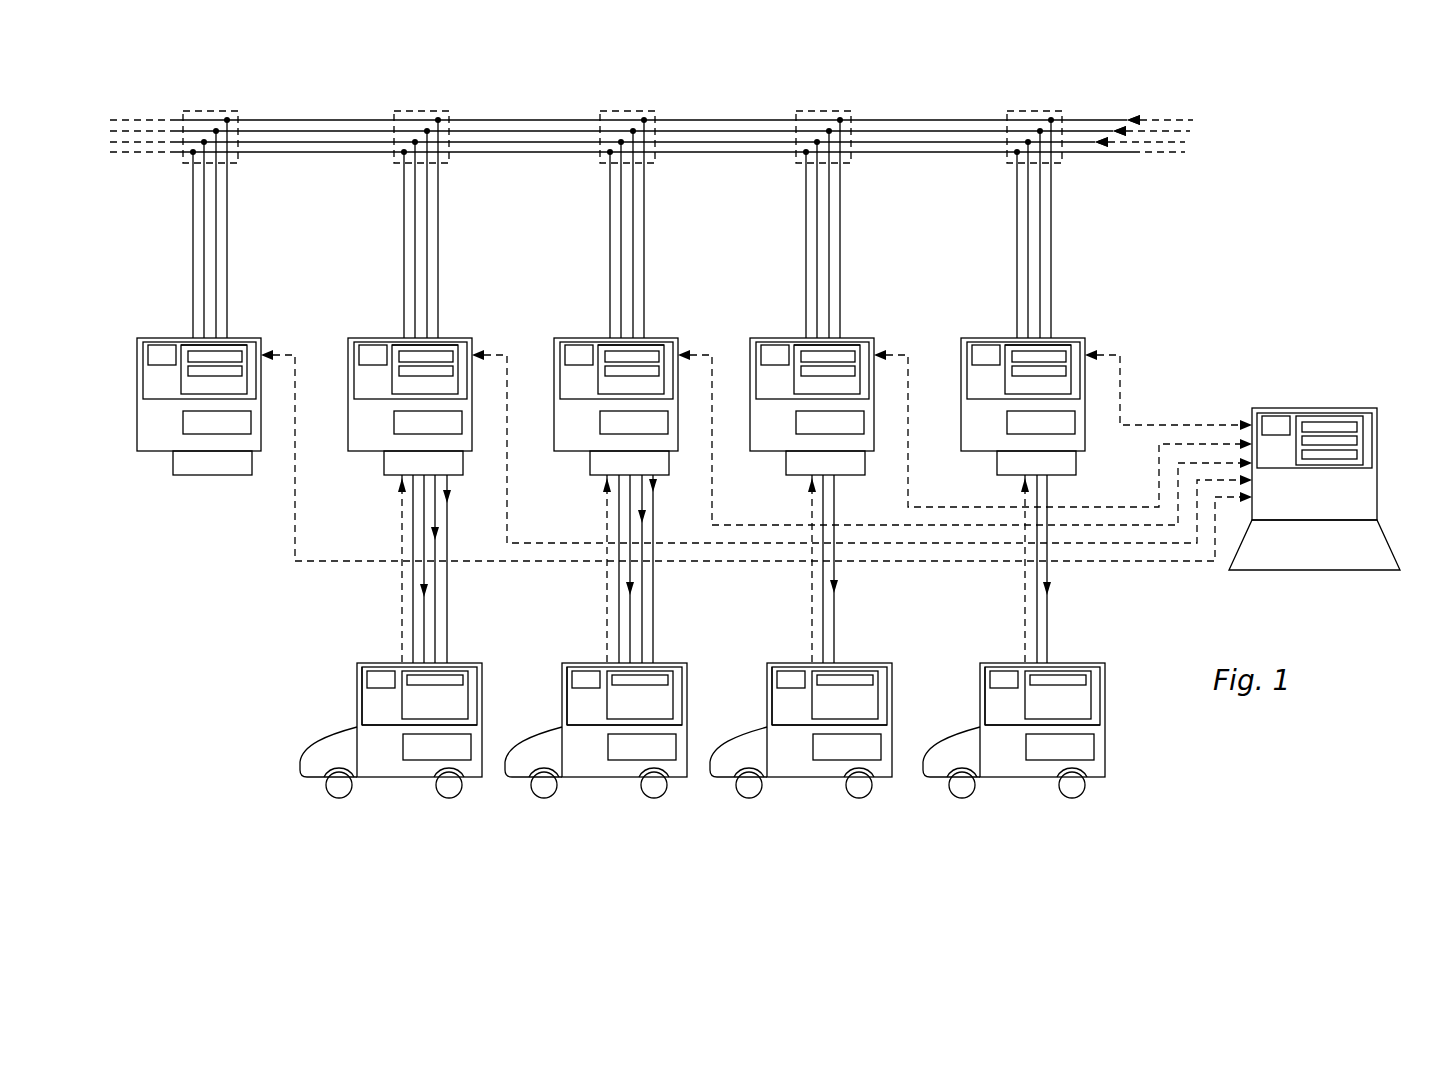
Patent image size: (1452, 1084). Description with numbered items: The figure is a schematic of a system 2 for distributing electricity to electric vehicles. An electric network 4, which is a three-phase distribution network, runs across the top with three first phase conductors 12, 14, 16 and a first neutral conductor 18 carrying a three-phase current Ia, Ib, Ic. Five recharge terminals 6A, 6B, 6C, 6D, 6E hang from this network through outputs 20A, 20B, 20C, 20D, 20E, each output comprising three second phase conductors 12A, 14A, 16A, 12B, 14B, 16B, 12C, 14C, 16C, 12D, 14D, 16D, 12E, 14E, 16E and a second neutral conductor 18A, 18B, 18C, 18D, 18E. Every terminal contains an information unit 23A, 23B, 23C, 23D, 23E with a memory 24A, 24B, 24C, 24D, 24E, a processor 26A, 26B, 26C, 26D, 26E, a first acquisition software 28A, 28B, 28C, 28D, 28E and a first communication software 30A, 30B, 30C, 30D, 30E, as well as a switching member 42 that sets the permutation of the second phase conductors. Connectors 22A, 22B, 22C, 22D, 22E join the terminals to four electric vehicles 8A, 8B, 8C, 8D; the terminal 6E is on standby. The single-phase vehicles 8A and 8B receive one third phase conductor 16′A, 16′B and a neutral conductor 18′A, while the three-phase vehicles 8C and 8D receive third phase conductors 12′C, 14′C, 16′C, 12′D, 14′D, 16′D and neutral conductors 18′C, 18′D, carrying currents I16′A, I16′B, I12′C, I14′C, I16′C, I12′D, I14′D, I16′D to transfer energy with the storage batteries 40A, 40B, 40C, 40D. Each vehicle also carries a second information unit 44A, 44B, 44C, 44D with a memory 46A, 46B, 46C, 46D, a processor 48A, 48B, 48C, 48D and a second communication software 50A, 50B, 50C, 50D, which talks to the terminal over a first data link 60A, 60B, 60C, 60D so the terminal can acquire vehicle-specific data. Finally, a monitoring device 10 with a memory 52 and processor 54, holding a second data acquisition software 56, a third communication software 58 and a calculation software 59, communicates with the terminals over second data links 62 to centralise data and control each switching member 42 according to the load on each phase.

The system 2 is at (944, 62).
The electric network 4 is at (1255, 88).
The first phase conductor 12 is at (1195, 120).
The first phase conductor 14 is at (1190, 131).
The first phase conductor 16 is at (1185, 143).
The first neutral conductor 18 is at (1178, 153).
The three-phase electric current Ia is at (1133, 118).
The three-phase electric current Ib is at (1117, 128).
The three-phase electric current Ic is at (1099, 139).
The output 20A is at (1011, 111).
The output 20B is at (800, 111).
The output 20C is at (604, 111).
The output 20D is at (398, 111).
The output 20E is at (187, 111).
The second phase conductor 12A is at (1051, 192).
The second phase conductor 12B is at (840, 192).
The second phase conductor 12C is at (644, 192).
The second phase conductor 12D is at (438, 192).
The second phase conductor 12E is at (227, 192).
The second phase conductor 14A is at (1040, 218).
The second phase conductor 14B is at (829, 218).
The second phase conductor 14C is at (633, 218).
The second phase conductor 14D is at (427, 218).
The second phase conductor 14E is at (216, 218).
The second phase conductor 16A is at (1028, 246).
The second phase conductor 16B is at (817, 246).
The second phase conductor 16C is at (621, 246).
The second phase conductor 16D is at (415, 246).
The second phase conductor 16E is at (204, 246).
The second neutral conductor 18A is at (1017, 270).
The second neutral conductor 18B is at (806, 270).
The second neutral conductor 18C is at (610, 270).
The second neutral conductor 18D is at (404, 270).
The second neutral conductor 18E is at (193, 270).
The recharge electric vehicle terminal 6A is at (995, 328).
The recharge electric vehicle terminal 6B is at (784, 328).
The recharge electric vehicle terminal 6C is at (588, 328).
The recharge electric vehicle terminal 6D is at (382, 328).
The recharge electric vehicle terminal 6E is at (171, 328).
The processor 26A is at (985, 352).
The processor 26B is at (774, 352).
The processor 26C is at (578, 352).
The processor 26D is at (372, 352).
The processor 26E is at (161, 352).
The information unit 23A is at (1057, 345).
The information unit 23B is at (846, 345).
The information unit 23C is at (650, 345).
The information unit 23D is at (444, 345).
The information unit 23E is at (233, 345).
The memory 24A is at (1063, 350).
The memory 24B is at (852, 350).
The memory 24C is at (656, 350).
The memory 24D is at (450, 350).
The memory 24E is at (239, 350).
The first acquisition software 28A is at (1067, 356).
The first acquisition software 28B is at (856, 356).
The first acquisition software 28C is at (660, 356).
The first acquisition software 28D is at (454, 356).
The first acquisition software 28E is at (243, 356).
The first communication software 30A is at (1067, 371).
The first communication software 30B is at (856, 371).
The first communication software 30C is at (660, 371).
The first communication software 30D is at (454, 371).
The first communication software 30E is at (243, 371).
The connector 22A is at (997, 462).
The connector 22B is at (786, 462).
The connector 22C is at (590, 462).
The connector 22D is at (384, 462).
The connector 22E is at (173, 462).
The switching member 42 is at (238, 424).
The second data link 62 is at (1213, 492).
The first data link 60A is at (1025, 650).
The first data link 60B is at (812, 650).
The first data link 60C is at (607, 652).
The first data link 60D is at (402, 650).
The third neutral conductor 18′A is at (823, 580).
The third neutral conductor 18′C is at (619, 503).
The third neutral conductor 18′D is at (413, 500).
The third phase conductor 16′A is at (1047, 618).
The third phase conductor 16′B is at (834, 618).
The third phase conductor 16′C is at (630, 512).
The third phase conductor 16′D is at (424, 518).
The third phase conductor 14′C is at (642, 567).
The third phase conductor 14′D is at (435, 566).
The third phase conductor 12′C is at (653, 623).
The third phase conductor 12′D is at (447, 622).
The current I12′C is at (675, 503).
The current I12′D is at (472, 504).
The current I14′C is at (644, 524).
The current I14′D is at (438, 541).
The current I16′A is at (1050, 597).
The current I16′B is at (838, 595).
The current I16′C is at (635, 595).
The current I16′D is at (430, 596).
The electric vehicle 8A is at (1027, 782).
The electric vehicle 8B is at (814, 782).
The electric vehicle 8C is at (609, 782).
The electric vehicle 8D is at (404, 782).
The second information unit 44A is at (994, 681).
The second information unit 44B is at (781, 681).
The second information unit 44C is at (576, 681).
The second information unit 44D is at (371, 681).
The processor 48A is at (985, 690).
The processor 48B is at (772, 690).
The processor 48C is at (567, 690).
The processor 48D is at (362, 690).
The memory 46A is at (1025, 700).
The memory 46B is at (812, 700).
The memory 46C is at (607, 700).
The memory 46D is at (402, 700).
The second communication software 50A is at (1040, 685).
The second communication software 50B is at (827, 685).
The second communication software 50C is at (622, 685).
The second communication software 50D is at (417, 685).
The storage battery 40A is at (1060, 747).
The storage battery 40B is at (847, 747).
The storage battery 40C is at (642, 747).
The storage battery 40D is at (437, 747).
The monitoring device 10 is at (1405, 500).
The processor 54 is at (1275, 422).
The memory 52 is at (1322, 417).
The second data acquisition software 56 is at (1355, 427).
The third communication software 58 is at (1355, 441).
The calculation software 59 is at (1355, 455).